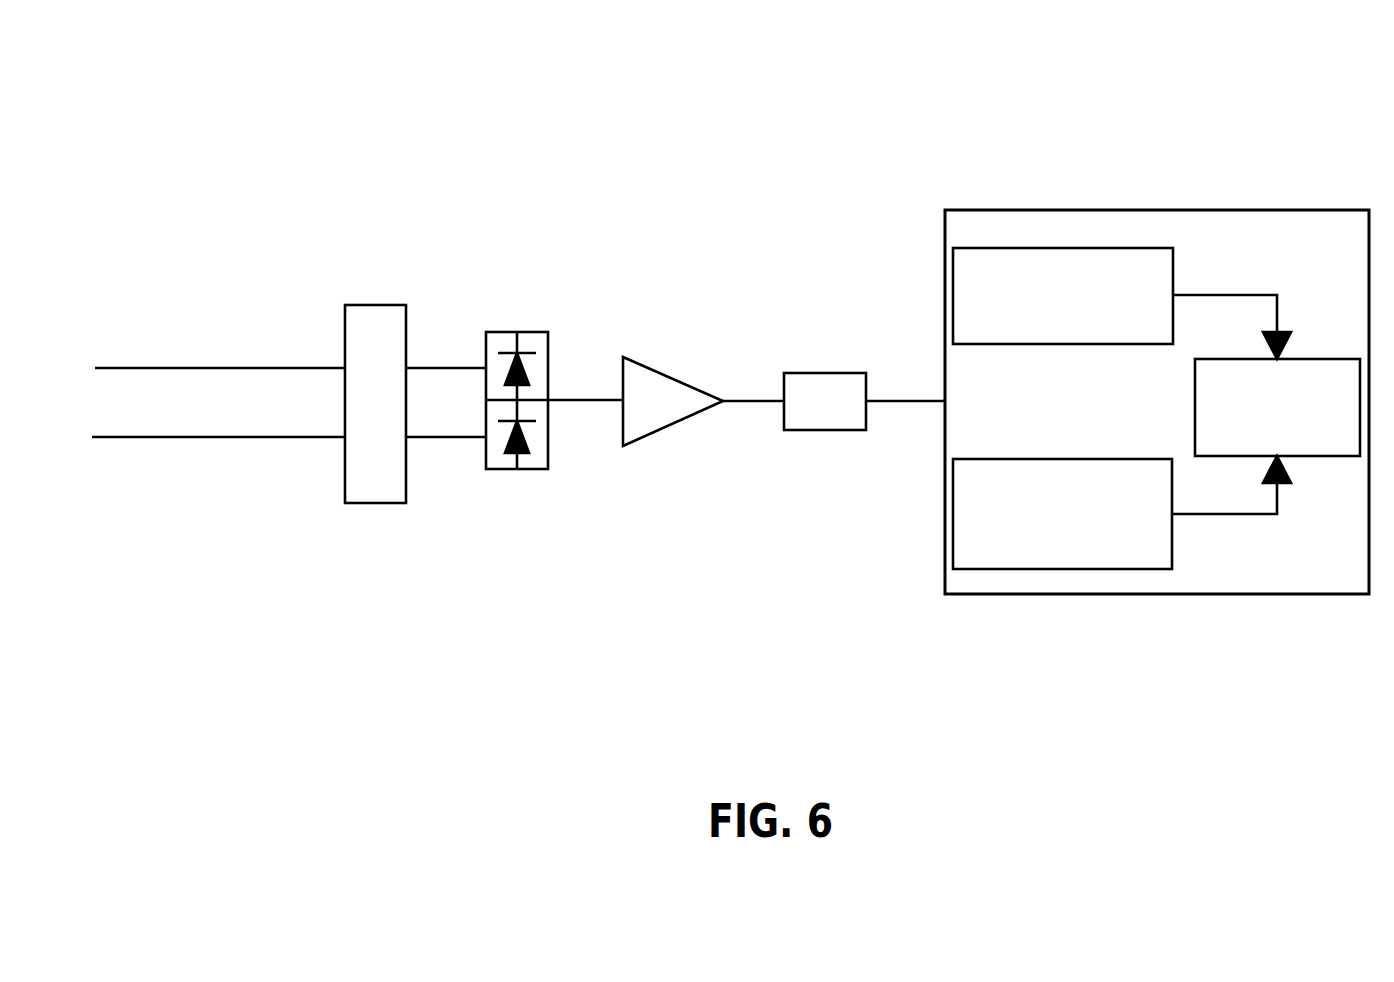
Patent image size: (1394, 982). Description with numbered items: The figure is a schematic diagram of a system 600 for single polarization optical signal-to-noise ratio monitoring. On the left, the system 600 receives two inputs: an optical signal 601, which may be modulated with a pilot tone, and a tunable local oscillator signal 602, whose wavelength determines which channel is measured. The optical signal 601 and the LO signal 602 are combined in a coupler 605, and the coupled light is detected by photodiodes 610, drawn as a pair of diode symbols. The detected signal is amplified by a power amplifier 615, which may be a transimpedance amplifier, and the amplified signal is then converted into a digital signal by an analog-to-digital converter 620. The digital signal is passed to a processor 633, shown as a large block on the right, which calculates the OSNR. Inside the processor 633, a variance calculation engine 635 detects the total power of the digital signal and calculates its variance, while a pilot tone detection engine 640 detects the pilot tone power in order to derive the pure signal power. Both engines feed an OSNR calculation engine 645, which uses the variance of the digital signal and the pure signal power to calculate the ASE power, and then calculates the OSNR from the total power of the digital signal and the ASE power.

The system 600 is at (1176, 87).
The optical signal 601 is at (237, 356).
The tunable local oscillator (LO) signal 602 is at (237, 425).
The coupler 605 is at (393, 412).
The photodiodes 610 is at (516, 332).
The power amplifier 615 is at (666, 414).
The analog-to-digital converter (ADC) 620 is at (843, 414).
The processor 633 is at (1146, 594).
The variance calculation engine 635 is at (1071, 306).
The pilot tone detection engine 640 is at (1071, 524).
The OSNR calculation engine 645 is at (1296, 417).